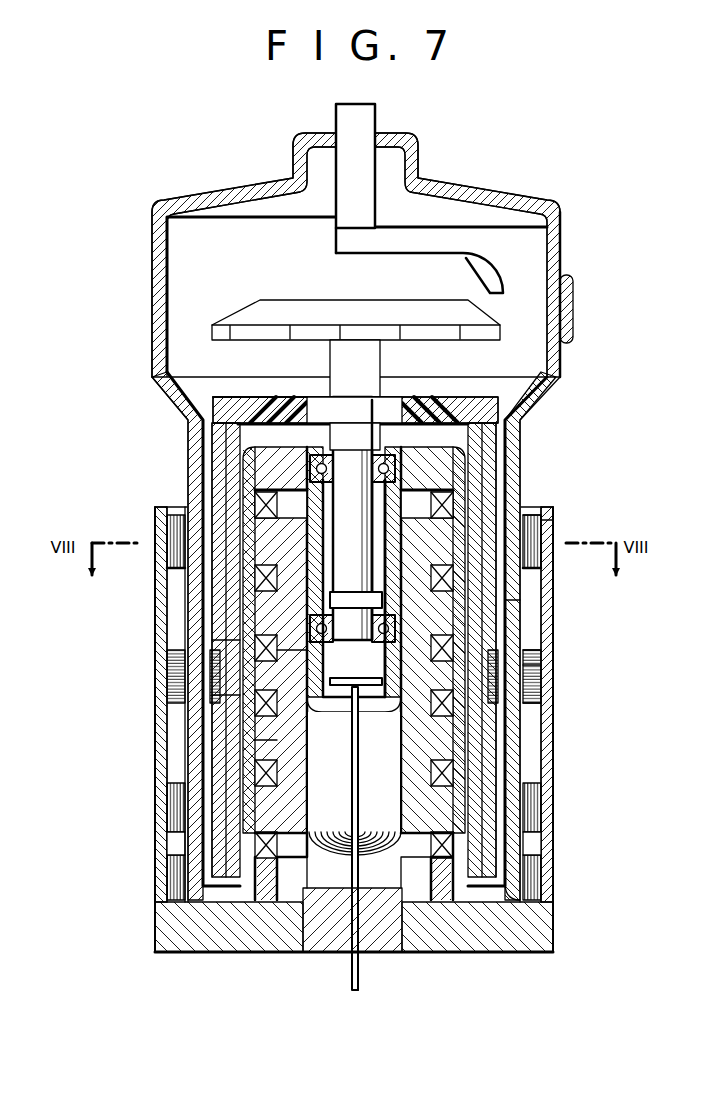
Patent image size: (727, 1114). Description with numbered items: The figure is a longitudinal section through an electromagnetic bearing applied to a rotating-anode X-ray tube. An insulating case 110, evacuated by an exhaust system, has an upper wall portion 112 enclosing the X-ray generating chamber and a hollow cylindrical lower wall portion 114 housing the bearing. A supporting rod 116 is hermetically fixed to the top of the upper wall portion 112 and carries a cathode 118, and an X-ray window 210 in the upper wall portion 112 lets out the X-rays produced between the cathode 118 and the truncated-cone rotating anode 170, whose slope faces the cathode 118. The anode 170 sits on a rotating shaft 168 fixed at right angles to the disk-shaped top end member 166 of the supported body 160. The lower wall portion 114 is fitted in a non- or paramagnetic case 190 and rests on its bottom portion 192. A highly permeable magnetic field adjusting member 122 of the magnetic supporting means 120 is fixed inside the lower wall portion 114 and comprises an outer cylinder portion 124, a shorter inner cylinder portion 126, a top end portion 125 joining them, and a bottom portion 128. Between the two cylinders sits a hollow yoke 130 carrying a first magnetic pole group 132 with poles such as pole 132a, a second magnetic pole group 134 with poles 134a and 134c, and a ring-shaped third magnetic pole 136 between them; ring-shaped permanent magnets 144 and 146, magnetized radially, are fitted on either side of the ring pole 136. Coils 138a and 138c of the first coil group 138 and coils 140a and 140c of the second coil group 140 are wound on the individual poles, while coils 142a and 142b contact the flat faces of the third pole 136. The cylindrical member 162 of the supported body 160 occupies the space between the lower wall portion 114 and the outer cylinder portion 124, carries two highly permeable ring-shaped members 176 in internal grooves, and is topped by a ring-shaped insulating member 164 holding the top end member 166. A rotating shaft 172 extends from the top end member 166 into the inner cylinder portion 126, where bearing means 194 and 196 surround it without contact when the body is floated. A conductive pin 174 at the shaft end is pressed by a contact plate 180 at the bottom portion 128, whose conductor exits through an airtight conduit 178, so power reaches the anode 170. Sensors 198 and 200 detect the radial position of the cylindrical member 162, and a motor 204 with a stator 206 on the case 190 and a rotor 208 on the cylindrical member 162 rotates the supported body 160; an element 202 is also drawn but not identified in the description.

The case 110 is at (470, 196).
The upper wall portion 112 is at (152, 268).
The lower wall portion 114 is at (517, 610).
The supporting rod 116 is at (348, 118).
The cathode 118 is at (492, 283).
The magnetic supporting means 120 is at (366, 870).
The magnetic field adjusting member 122 is at (447, 442).
The outer cylinder portion 124 is at (521, 472).
The top end portion 125 is at (560, 400).
The inner cylinder portion 126 is at (548, 540).
The bottom portion 128 is at (410, 730).
The yoke 130 is at (292, 748).
The first magnetic pole group 132 is at (292, 520).
The magnetic pole 132a is at (268, 556).
The second magnetic pole group 134 is at (268, 792).
The magnetic pole 134a is at (262, 800).
The magnetic pole 134c is at (430, 845).
The ring-shaped third magnetic pole 136 is at (287, 660).
The first coil group 138 is at (222, 416).
The coil 138a is at (282, 400).
The coil 138c is at (492, 442).
The second coil group 140 is at (284, 858).
The coil 140a is at (285, 862).
The coil 140c is at (452, 880).
The coil 142a is at (232, 640).
The coil 142b is at (216, 696).
The ring-shaped permanent magnet 144 is at (214, 660).
The ring-shaped permanent magnet 146 is at (270, 742).
The supported body 160 is at (176, 540).
The cylindrical member 162 is at (246, 592).
The ring-shaped insulating member 164 is at (246, 400).
The top end member 166 is at (366, 398).
The rotating shaft 168 is at (352, 362).
The rotating anode 170 is at (400, 318).
The rotating shaft 172 is at (402, 398).
The conductive pin 174 is at (356, 641).
The ring-shaped member 176 is at (266, 500).
The conduit 178 is at (350, 978).
The contact plate 180 is at (385, 646).
The case 190 is at (552, 860).
The bottom portion 192 is at (215, 940).
The bearing means 194 is at (320, 454).
The bearing means 196 is at (325, 644).
The sensor 198 is at (531, 525).
The sensor 200 is at (546, 812).
The cup wall 202 is at (550, 898).
The motor 204 is at (534, 648).
The stator 206 is at (540, 690).
The rotor 208 is at (537, 666).
The X-ray window 210 is at (574, 298).